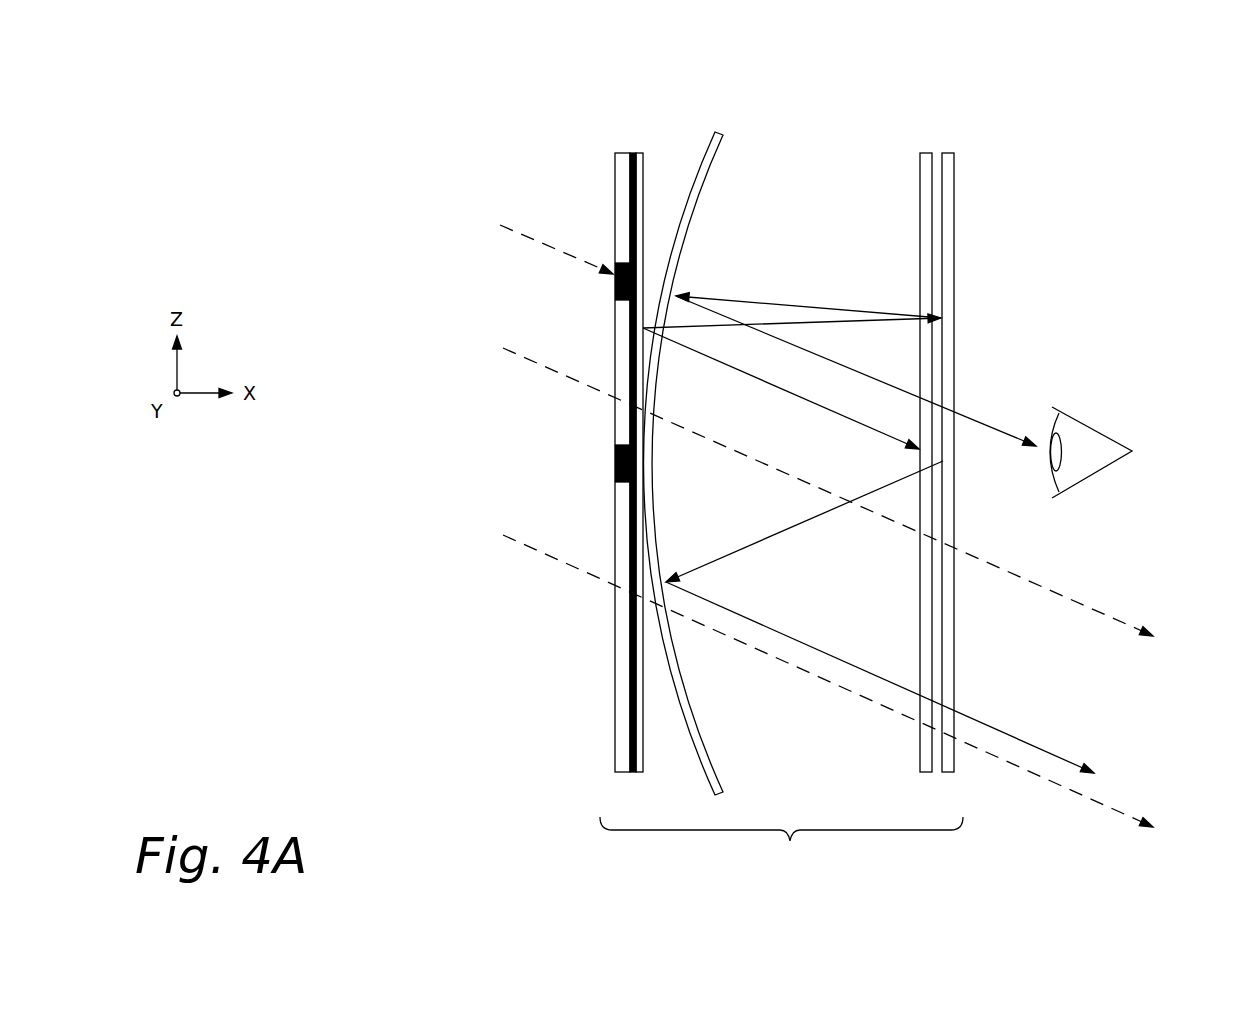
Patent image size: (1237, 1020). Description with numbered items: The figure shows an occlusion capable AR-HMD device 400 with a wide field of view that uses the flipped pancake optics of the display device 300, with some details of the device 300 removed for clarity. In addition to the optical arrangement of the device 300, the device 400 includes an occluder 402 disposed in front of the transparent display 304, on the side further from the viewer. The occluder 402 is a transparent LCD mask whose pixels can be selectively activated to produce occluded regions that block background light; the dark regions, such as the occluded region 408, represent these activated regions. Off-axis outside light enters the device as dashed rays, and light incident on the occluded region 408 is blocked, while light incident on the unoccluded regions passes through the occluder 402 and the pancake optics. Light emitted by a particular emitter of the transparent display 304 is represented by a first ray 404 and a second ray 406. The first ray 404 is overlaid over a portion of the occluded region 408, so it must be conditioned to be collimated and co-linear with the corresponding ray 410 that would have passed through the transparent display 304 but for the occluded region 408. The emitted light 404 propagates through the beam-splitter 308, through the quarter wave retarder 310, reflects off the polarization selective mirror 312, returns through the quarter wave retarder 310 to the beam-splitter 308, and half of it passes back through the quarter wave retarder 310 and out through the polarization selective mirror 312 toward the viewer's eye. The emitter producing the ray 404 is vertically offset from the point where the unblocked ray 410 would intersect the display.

The occlusion capable AR-HMD device 400 is at (1108, 130).
The occluder 402 is at (412, 462).
The first ray 404 is at (822, 323).
The second ray 406 is at (784, 389).
The occluded region 408 is at (615, 290).
The corresponding ray 410 is at (537, 246).
The transparent display 304 is at (645, 169).
The beam-splitter 308 is at (713, 759).
The quarter wave retarder 310 is at (920, 627).
The polarization selective mirror 312 is at (954, 648).
The display device with pancake optics 300 is at (781, 861).